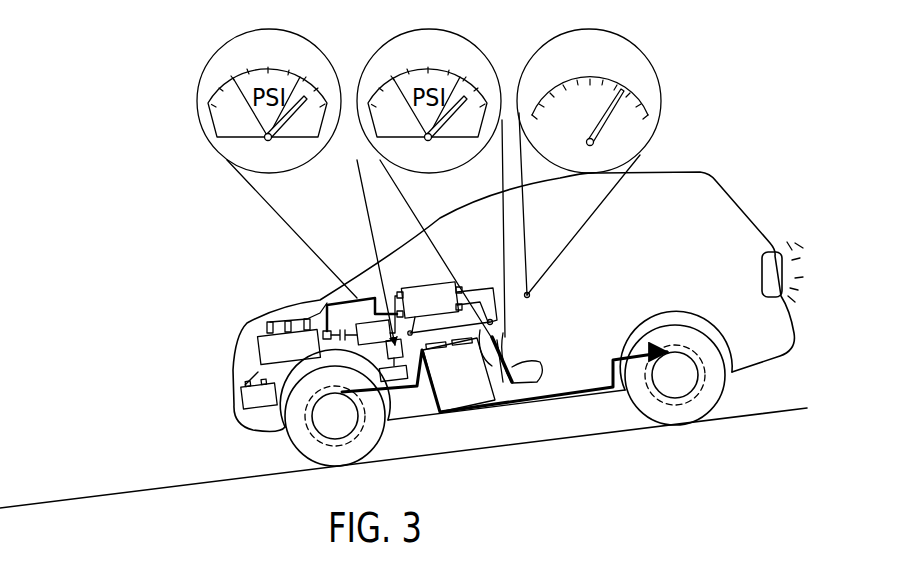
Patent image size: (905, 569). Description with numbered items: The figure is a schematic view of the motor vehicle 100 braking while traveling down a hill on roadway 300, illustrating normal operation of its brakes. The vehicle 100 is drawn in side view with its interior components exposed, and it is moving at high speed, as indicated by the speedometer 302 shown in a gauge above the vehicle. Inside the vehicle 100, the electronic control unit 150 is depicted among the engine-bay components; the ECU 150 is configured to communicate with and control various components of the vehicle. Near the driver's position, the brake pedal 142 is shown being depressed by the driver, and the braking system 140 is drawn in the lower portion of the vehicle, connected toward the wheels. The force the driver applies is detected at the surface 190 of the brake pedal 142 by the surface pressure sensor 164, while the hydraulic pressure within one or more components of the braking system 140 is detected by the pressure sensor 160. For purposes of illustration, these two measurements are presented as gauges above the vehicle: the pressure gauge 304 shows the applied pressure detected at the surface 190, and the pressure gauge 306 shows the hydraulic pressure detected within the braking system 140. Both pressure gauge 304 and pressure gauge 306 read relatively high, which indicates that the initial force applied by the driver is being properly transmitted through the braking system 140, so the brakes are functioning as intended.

The motor vehicle 100 is at (690, 170).
The braking system 140 is at (460, 360).
The brake pedal 142 is at (494, 372).
The electronic control unit 150 is at (433, 290).
The pressure sensor 160 is at (492, 321).
The surface pressure sensor 164 is at (520, 353).
The surface 190 is at (510, 392).
The roadway 300 is at (53, 500).
The speedometer 302 is at (627, 92).
The pressure gauge 304 is at (400, 80).
The pressure gauge 306 is at (230, 80).